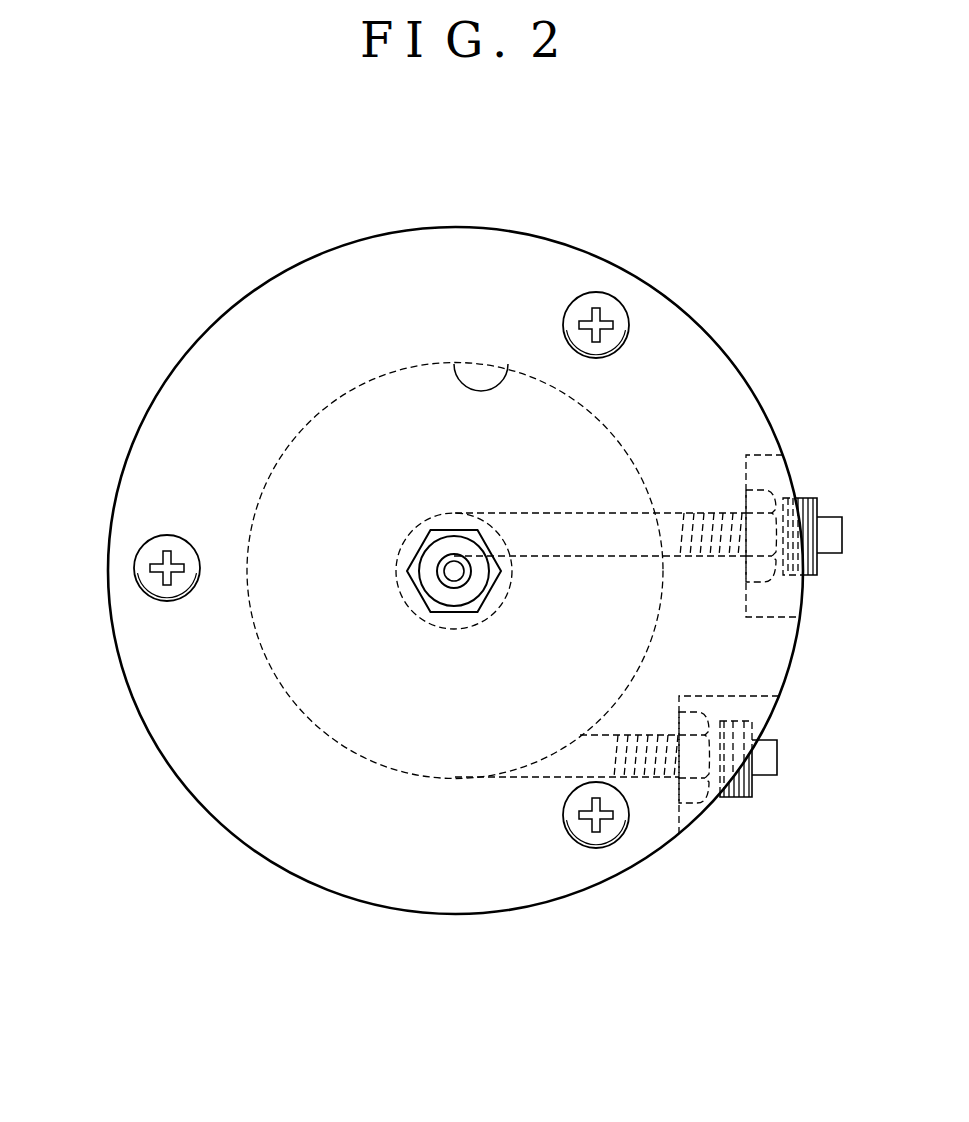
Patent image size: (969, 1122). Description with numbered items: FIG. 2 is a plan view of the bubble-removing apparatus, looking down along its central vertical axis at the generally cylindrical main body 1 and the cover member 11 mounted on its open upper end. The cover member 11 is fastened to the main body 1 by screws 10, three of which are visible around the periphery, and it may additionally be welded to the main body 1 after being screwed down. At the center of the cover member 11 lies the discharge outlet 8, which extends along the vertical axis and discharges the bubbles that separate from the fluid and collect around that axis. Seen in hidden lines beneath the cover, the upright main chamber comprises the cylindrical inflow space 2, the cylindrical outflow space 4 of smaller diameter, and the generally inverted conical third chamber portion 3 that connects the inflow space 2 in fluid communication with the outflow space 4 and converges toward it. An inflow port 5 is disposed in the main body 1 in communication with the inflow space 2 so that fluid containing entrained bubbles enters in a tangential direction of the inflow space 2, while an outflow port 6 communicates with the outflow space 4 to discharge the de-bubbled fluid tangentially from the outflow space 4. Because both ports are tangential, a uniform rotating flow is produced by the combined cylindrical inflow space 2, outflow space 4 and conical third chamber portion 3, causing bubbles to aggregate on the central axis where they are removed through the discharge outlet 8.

The main body 1 is at (217, 313).
The inflow space 2 is at (453, 367).
The third chamber portion 3 is at (378, 408).
The outflow space 4 is at (407, 607).
The inflow port 5 is at (542, 778).
The outflow port 6 is at (614, 514).
The discharge outlet 8 is at (454, 571).
The screws 10 is at (618, 303).
The cover member 11 is at (710, 339).